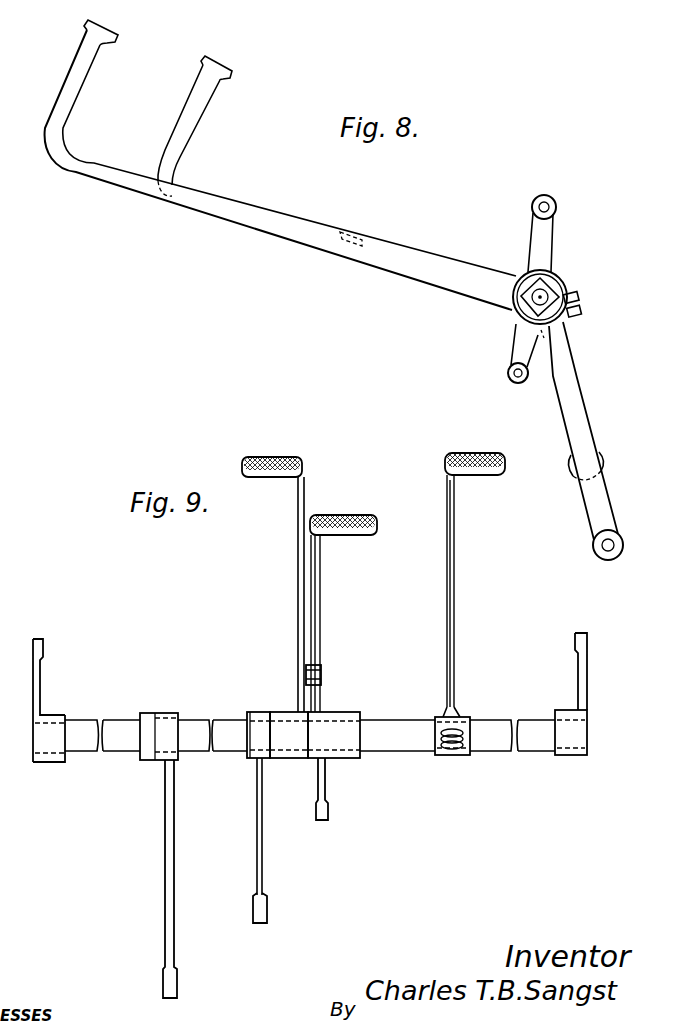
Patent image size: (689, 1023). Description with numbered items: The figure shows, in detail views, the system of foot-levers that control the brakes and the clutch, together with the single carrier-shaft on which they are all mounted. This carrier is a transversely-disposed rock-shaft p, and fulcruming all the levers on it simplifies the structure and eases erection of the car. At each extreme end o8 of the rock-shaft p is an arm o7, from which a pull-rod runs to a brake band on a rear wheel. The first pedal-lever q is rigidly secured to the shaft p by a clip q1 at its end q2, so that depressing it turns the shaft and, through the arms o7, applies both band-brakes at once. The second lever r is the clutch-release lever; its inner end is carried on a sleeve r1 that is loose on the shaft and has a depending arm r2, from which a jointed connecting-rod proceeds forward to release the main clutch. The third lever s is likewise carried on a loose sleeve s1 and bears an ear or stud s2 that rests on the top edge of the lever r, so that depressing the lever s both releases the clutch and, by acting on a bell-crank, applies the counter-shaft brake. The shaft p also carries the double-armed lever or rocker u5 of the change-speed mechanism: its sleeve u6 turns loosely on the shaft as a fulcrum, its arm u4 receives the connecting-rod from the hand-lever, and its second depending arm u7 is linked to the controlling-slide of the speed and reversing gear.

In FIG. 8, the third pedal-lever s is at (363, 258).
In FIG. 9, the third pedal-lever s is at (293, 620).
In FIG. 8, the ear or stud s2 is at (364, 243).
In FIG. 9, the ear or stud s2 is at (322, 672).
In FIG. 8, the arm o7 is at (548, 235).
In FIG. 8, the extreme end of rock-shaft o8 is at (526, 306).
In FIG. 8, the depending arm r2 is at (514, 370).
In FIG. 9, the depending arm r2 is at (327, 783).
In FIG. 8, the arm of double-armed lever u4 is at (603, 465).
In FIG. 9, the arm of double-armed lever u4 is at (256, 840).
In FIG. 8, the depending arm u7 is at (600, 497).
In FIG. 9, the depending arm u7 is at (165, 875).
In FIG. 9, the rock-shaft p is at (392, 712).
In FIG. 9, the sleeve u6 is at (218, 715).
In FIG. 9, the double-armed lever or rocker u5 is at (254, 758).
In FIG. 9, the sleeve s1 is at (289, 735).
In FIG. 9, the sleeve r1 is at (334, 735).
In FIG. 9, the clutch-release lever r is at (321, 615).
In FIG. 9, the brake pedal-lever q is at (456, 596).
In FIG. 9, the end of brake lever q2 is at (456, 697).
In FIG. 9, the clip q1 is at (462, 756).